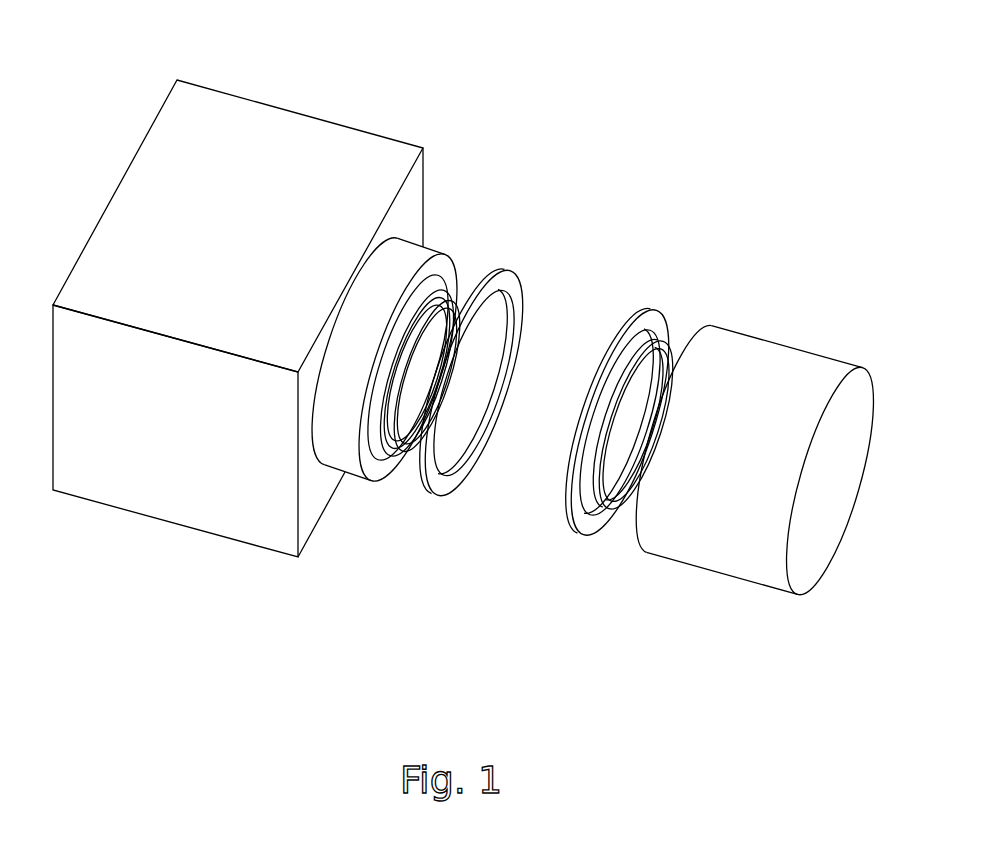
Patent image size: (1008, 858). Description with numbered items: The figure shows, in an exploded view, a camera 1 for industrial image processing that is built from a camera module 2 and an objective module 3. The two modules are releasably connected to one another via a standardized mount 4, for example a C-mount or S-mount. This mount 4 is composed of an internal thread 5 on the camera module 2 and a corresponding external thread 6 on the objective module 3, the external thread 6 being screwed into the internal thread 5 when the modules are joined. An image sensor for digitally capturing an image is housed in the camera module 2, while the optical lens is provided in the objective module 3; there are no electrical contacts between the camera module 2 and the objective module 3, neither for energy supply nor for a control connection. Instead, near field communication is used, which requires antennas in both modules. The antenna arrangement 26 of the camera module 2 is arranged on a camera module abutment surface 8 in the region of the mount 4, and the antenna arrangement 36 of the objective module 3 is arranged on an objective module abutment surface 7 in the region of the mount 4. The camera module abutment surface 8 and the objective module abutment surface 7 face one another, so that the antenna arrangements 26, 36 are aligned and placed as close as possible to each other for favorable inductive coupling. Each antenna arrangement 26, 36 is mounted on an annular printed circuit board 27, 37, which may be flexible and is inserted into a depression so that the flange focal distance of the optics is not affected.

The camera 1 is at (592, 108).
The camera module 2 is at (205, 158).
The objective module 3 is at (720, 535).
The standardized mount 4 is at (438, 290).
The internal thread 5 is at (402, 457).
The external thread 6 is at (657, 408).
The objective module abutment surface 7 is at (690, 320).
The camera module abutment surface 8 is at (457, 267).
The antenna arrangement 26 is at (452, 487).
The printed circuit board 27 is at (507, 272).
The antenna arrangement 36 is at (583, 535).
The printed circuit board 37 is at (593, 388).